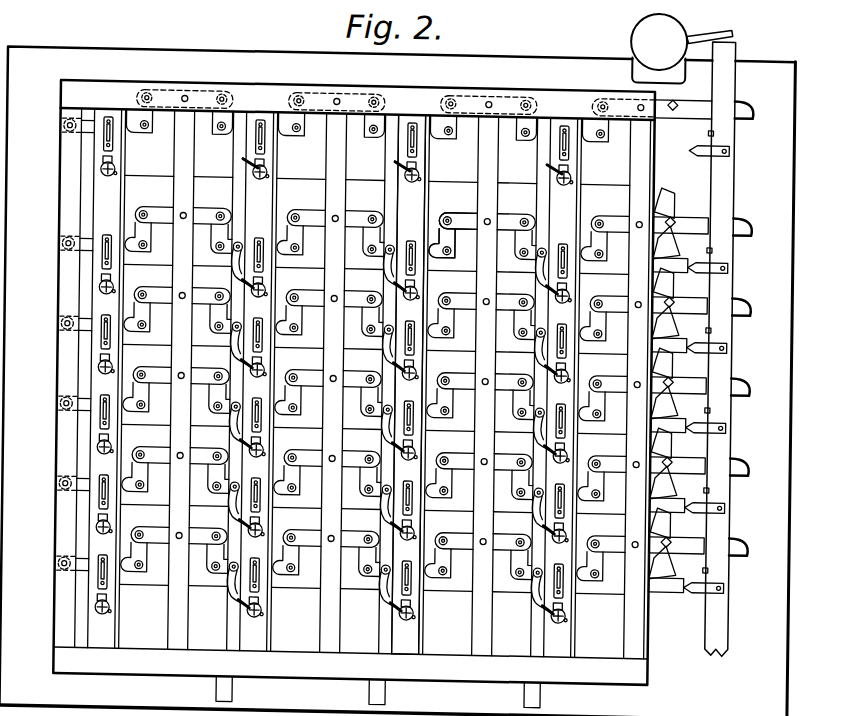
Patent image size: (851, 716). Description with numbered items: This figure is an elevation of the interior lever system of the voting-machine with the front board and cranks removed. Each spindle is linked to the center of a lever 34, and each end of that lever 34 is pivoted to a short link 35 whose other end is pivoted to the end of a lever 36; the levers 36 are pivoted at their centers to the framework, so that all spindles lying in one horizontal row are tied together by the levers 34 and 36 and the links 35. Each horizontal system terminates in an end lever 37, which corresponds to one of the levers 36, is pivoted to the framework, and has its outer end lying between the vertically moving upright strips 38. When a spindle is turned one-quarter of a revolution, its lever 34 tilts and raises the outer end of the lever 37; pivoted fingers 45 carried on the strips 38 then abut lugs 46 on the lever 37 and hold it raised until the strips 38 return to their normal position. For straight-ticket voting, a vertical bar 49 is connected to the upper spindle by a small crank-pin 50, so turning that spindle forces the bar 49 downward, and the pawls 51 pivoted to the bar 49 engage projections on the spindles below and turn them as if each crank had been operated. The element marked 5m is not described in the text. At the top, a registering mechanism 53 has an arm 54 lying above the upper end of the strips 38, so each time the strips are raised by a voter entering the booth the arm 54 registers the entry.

The lever 34 is at (440, 250).
The short link 35 is at (446, 222).
The lever 36 is at (466, 212).
The end lever 37 is at (695, 211).
The upright strip 38 is at (730, 363).
The pivoted finger 45 is at (706, 331).
The lug 46 is at (677, 219).
The vertical bar 49 is at (395, 179).
The crank-pin 50 is at (405, 163).
The pawl 51 is at (389, 269).
The pin screw 5m is at (397, 293).
The registering mechanism 53 is at (639, 21).
The arm 54 is at (699, 18).